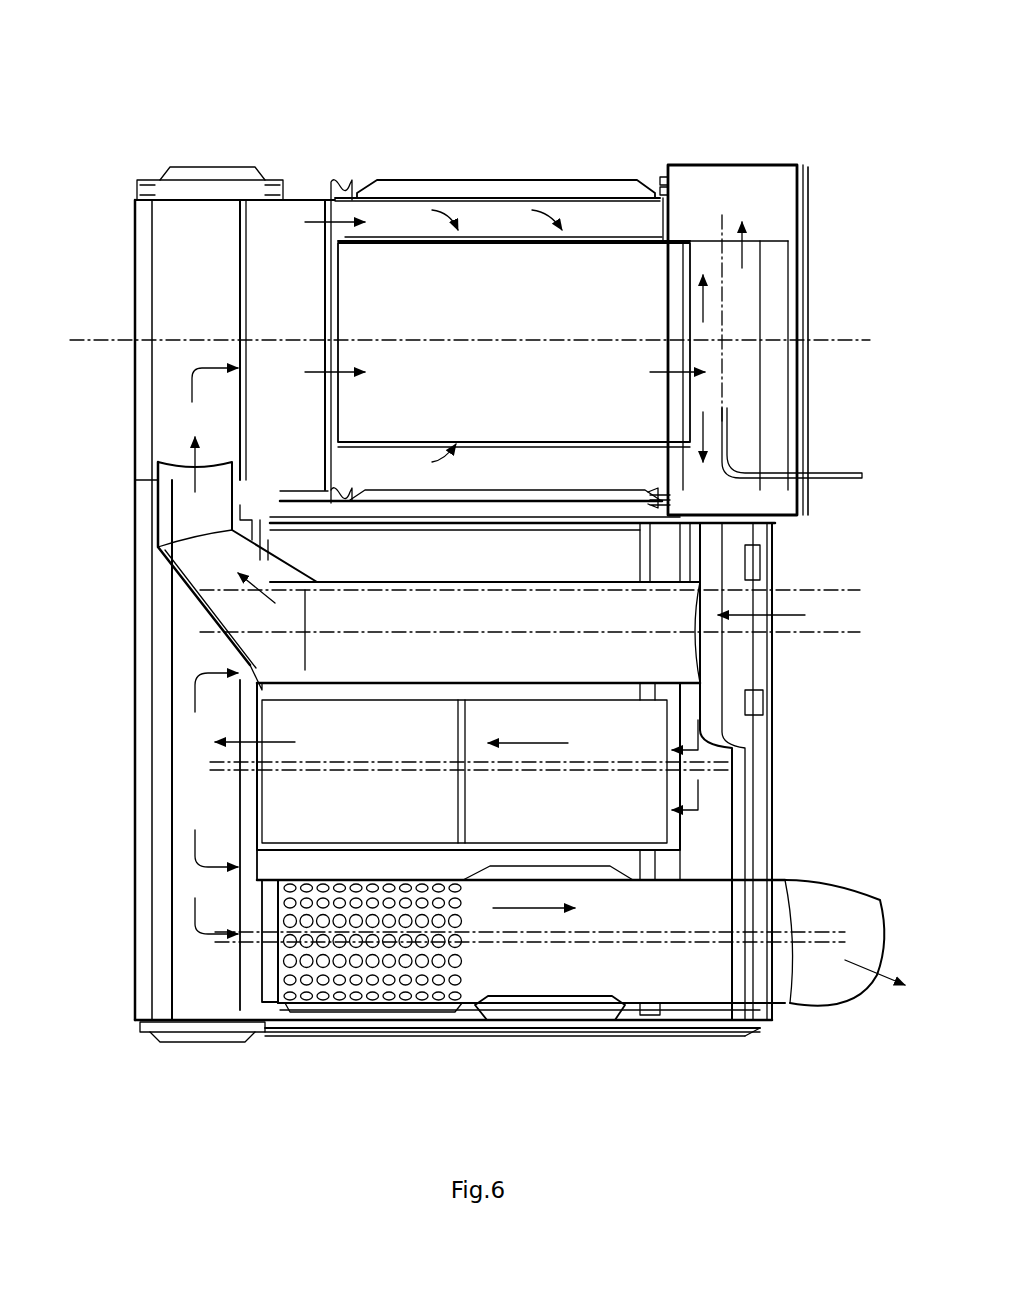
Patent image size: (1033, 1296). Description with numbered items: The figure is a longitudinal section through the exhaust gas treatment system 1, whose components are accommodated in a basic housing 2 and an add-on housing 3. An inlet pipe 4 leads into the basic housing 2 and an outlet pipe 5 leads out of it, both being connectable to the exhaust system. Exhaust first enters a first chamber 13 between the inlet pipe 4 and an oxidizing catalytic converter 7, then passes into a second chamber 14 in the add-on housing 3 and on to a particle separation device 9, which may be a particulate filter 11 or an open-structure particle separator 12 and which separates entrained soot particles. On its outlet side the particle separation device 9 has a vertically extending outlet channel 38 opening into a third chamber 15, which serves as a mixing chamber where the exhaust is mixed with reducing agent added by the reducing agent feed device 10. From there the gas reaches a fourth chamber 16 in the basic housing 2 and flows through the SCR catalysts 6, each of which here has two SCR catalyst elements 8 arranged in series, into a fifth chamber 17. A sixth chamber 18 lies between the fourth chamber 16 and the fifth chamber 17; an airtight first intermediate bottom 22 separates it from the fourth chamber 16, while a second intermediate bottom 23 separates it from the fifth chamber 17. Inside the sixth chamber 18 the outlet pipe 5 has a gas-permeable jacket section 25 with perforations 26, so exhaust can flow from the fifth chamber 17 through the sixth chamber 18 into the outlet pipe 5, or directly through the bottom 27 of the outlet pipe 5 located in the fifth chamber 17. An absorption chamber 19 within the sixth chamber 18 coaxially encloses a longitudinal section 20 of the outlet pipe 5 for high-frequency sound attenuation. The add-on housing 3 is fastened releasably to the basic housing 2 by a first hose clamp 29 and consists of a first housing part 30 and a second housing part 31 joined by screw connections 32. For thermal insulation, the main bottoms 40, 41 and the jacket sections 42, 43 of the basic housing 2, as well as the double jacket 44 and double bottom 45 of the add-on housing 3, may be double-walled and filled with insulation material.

The exhaust gas treatment system 1 is at (100, 138).
The basic housing 2 is at (478, 1046).
The add-on housing 3 is at (598, 180).
The inlet pipe 4 is at (536, 624).
The outlet pipe 5 is at (636, 920).
The SCR catalyst 6 is at (541, 816).
The oxidizing catalytic converter 7 is at (290, 317).
The SCR catalyst element 8 is at (357, 723).
The particle separation device 9 is at (447, 328).
The reducing agent feed device 10 is at (733, 467).
The particulate filter 11 is at (607, 297).
The particle separator 12 is at (557, 272).
The first chamber 13 is at (180, 314).
The second chamber 14 is at (477, 213).
The third chamber 15 is at (733, 190).
The fourth chamber 16 is at (707, 843).
The fifth chamber 17 is at (194, 812).
The sixth chamber 18 is at (484, 563).
The absorption chamber 19 is at (582, 1013).
The longitudinal section 20 is at (553, 998).
The first intermediate bottom 22 is at (641, 543).
The second intermediate bottom 23 is at (283, 538).
The jacket section 25 is at (355, 986).
The perforations 26 is at (340, 948).
The bottom 27 is at (270, 972).
The first hose clamp 29 is at (341, 178).
The first housing part 30 is at (518, 213).
The second housing part 31 is at (777, 162).
The screw connection 32 is at (660, 195).
The outlet channel 38 is at (747, 328).
The main bottom 40 is at (175, 664).
The main bottom 41 is at (733, 777).
The jacket section 42 is at (510, 1043).
The jacket section 43 is at (238, 168).
The double jacket 44 is at (425, 197).
The double bottom 45 is at (807, 213).